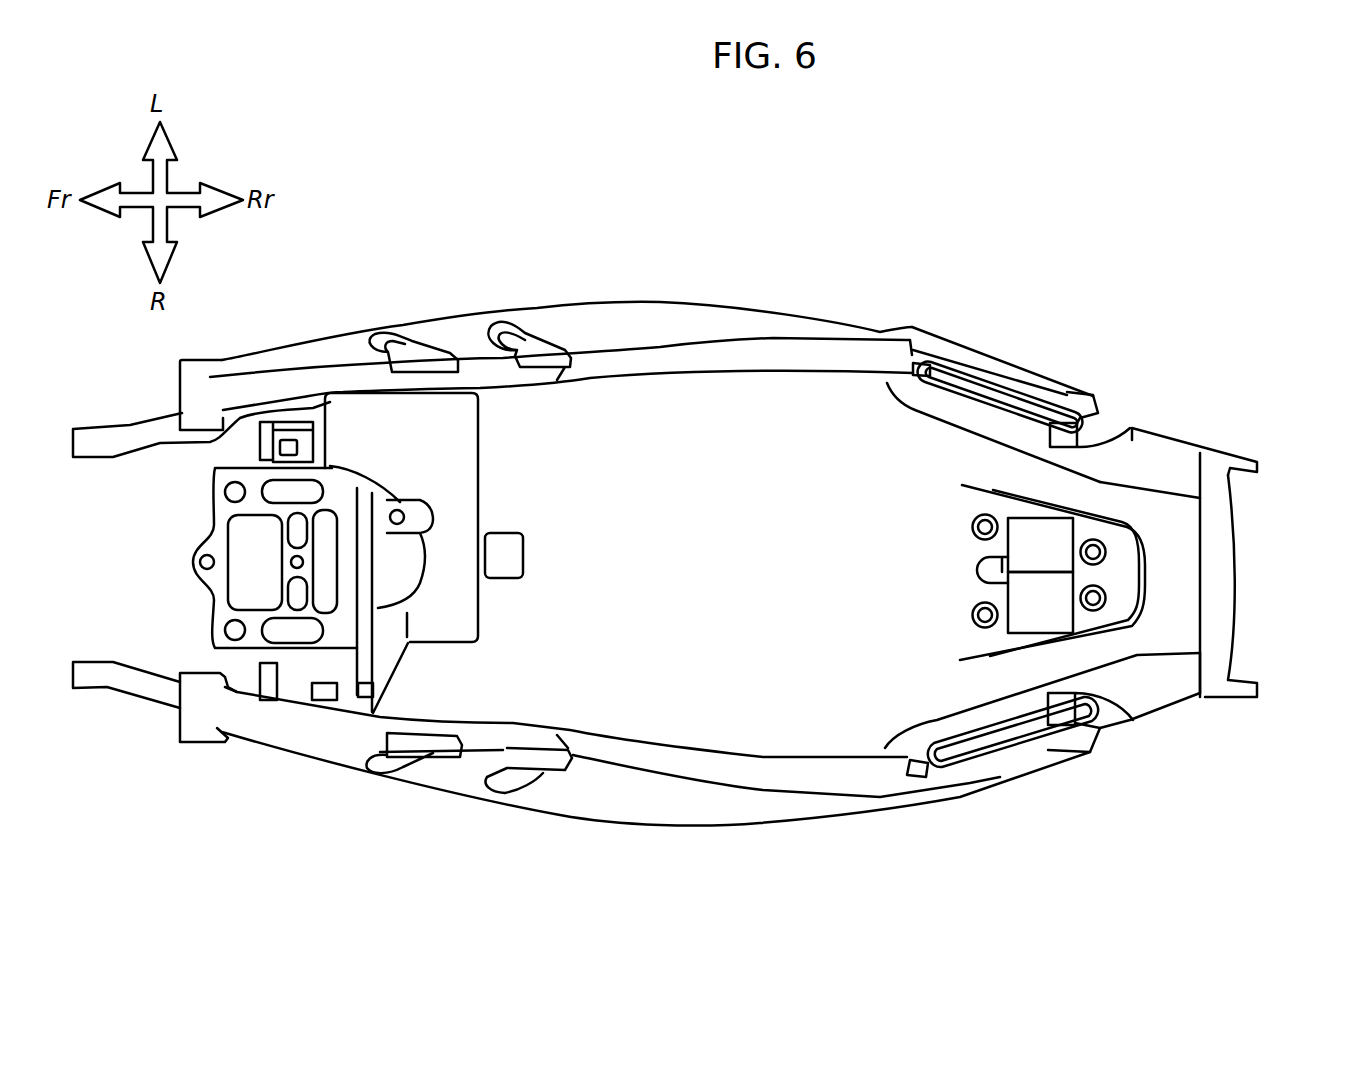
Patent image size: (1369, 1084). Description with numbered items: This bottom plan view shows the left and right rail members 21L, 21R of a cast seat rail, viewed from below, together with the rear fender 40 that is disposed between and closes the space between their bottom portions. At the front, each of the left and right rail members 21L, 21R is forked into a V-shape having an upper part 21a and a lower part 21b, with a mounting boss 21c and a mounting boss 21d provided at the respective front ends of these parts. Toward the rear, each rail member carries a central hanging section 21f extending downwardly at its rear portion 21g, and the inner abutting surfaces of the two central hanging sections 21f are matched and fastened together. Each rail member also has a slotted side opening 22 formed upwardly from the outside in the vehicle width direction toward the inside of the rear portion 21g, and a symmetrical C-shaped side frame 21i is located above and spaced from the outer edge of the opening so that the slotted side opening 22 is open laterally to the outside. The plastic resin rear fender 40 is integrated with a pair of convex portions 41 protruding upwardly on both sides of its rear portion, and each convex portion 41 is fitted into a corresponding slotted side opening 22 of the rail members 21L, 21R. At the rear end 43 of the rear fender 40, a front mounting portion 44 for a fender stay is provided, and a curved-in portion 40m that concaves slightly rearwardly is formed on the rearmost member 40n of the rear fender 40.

The left rail member 21L is at (743, 324).
The right rail member 21R is at (688, 779).
The upper part 21a is at (118, 428).
The lower part 21b is at (250, 375).
The mounting boss 21c is at (90, 448).
The mounting boss 21d is at (205, 362).
The central hanging section 21f is at (1052, 563).
The rear portion 21g is at (1077, 360).
The C-shaped side frame 21i is at (988, 355).
The slotted side opening 22 is at (1052, 401).
The rear fender 40 is at (657, 718).
The curved-in portion 40m is at (1237, 512).
The rearmost member 40n is at (1205, 625).
The convex portion 41 is at (1011, 407).
The rear end 43 is at (1168, 500).
The front mounting portion 44 is at (1122, 570).